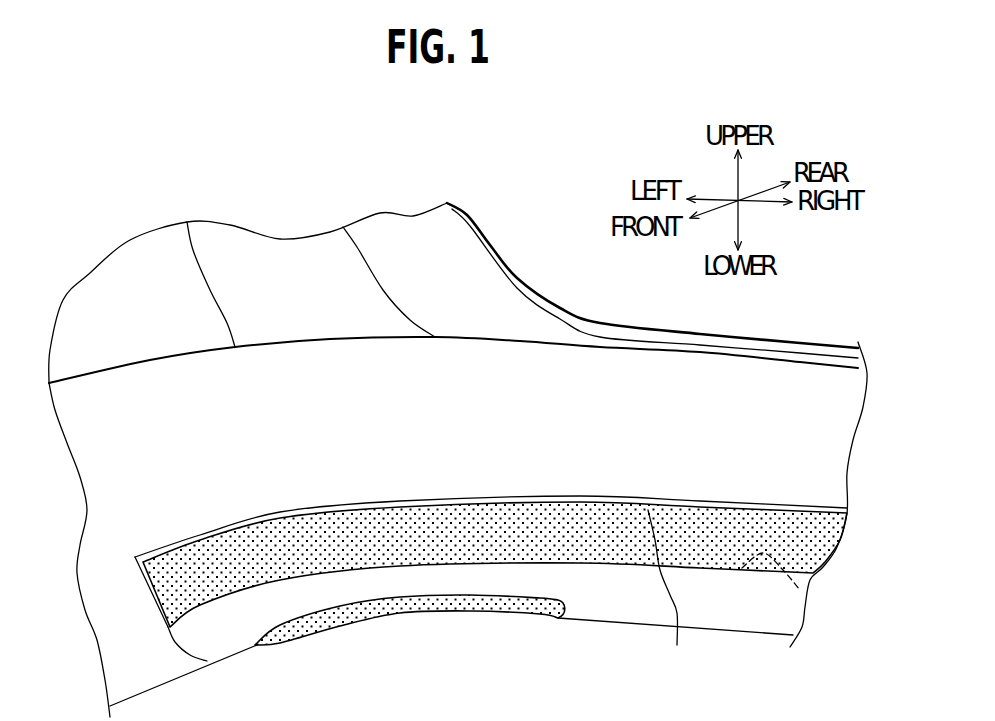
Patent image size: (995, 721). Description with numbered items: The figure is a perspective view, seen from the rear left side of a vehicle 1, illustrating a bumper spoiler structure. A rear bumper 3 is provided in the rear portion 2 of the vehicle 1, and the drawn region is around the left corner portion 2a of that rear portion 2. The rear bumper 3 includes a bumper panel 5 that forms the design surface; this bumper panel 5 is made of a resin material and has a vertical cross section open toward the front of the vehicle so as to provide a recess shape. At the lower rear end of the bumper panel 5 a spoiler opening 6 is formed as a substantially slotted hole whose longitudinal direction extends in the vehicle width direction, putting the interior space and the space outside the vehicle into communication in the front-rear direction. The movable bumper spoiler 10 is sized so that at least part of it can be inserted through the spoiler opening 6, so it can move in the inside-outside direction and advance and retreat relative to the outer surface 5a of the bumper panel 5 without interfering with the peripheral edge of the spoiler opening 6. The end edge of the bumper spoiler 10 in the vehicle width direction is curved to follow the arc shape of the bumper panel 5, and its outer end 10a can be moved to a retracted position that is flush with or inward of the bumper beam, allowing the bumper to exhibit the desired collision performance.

The vehicle 1 is at (130, 213).
The rear portion 2 is at (113, 310).
The left corner portion 2a is at (333, 580).
The rear bumper 3 is at (113, 463).
The bumper panel 5 is at (488, 332).
The outer surface 5a is at (735, 462).
The spoiler opening 6 is at (800, 590).
The bumper spoiler 10 is at (195, 583).
The outer end 10a is at (674, 596).